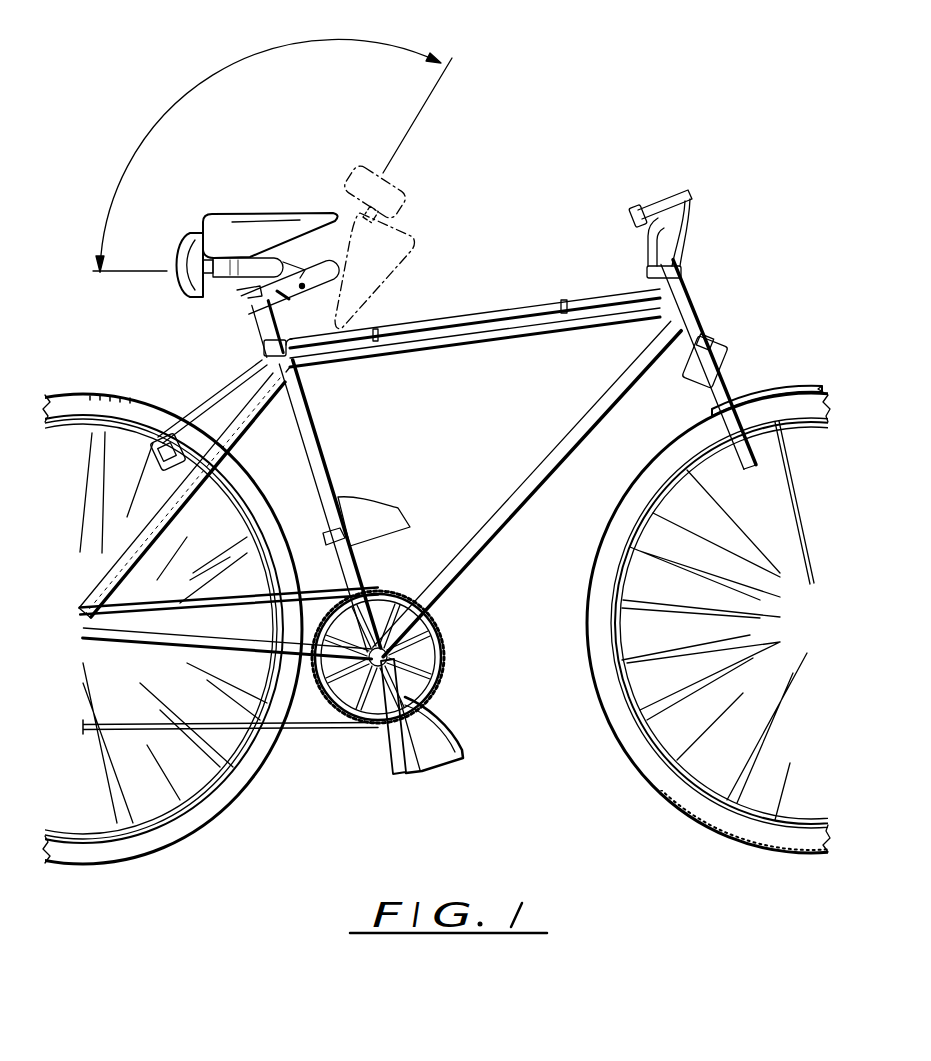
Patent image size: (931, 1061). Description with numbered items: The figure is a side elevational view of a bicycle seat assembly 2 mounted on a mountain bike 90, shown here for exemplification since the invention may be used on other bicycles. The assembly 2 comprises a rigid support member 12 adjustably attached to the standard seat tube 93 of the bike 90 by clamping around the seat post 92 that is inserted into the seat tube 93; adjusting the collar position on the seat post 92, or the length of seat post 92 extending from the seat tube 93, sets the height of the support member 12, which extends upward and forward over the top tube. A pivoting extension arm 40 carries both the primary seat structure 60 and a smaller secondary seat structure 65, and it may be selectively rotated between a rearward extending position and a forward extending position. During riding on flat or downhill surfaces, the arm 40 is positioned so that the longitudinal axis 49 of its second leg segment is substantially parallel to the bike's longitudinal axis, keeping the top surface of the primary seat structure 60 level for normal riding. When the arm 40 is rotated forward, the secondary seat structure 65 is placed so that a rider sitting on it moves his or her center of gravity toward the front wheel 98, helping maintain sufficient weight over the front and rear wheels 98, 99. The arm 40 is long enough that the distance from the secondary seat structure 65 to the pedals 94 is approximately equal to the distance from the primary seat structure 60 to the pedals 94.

The bicycle seat assembly 2 is at (257, 192).
The rigid support member 12 is at (247, 317).
The pivoting extension arm 40 is at (250, 288).
The longitudinal axis of the second leg segment 49 is at (437, 88).
The primary seat structure 60 is at (235, 222).
The secondary seat structure 65 is at (177, 257).
The mountain bike 90 is at (688, 278).
The seat post 92 is at (263, 340).
The seat tube 93 is at (313, 427).
The pedals 94 is at (400, 513).
The front wheel 98 is at (653, 790).
The rear wheel 99 is at (233, 802).